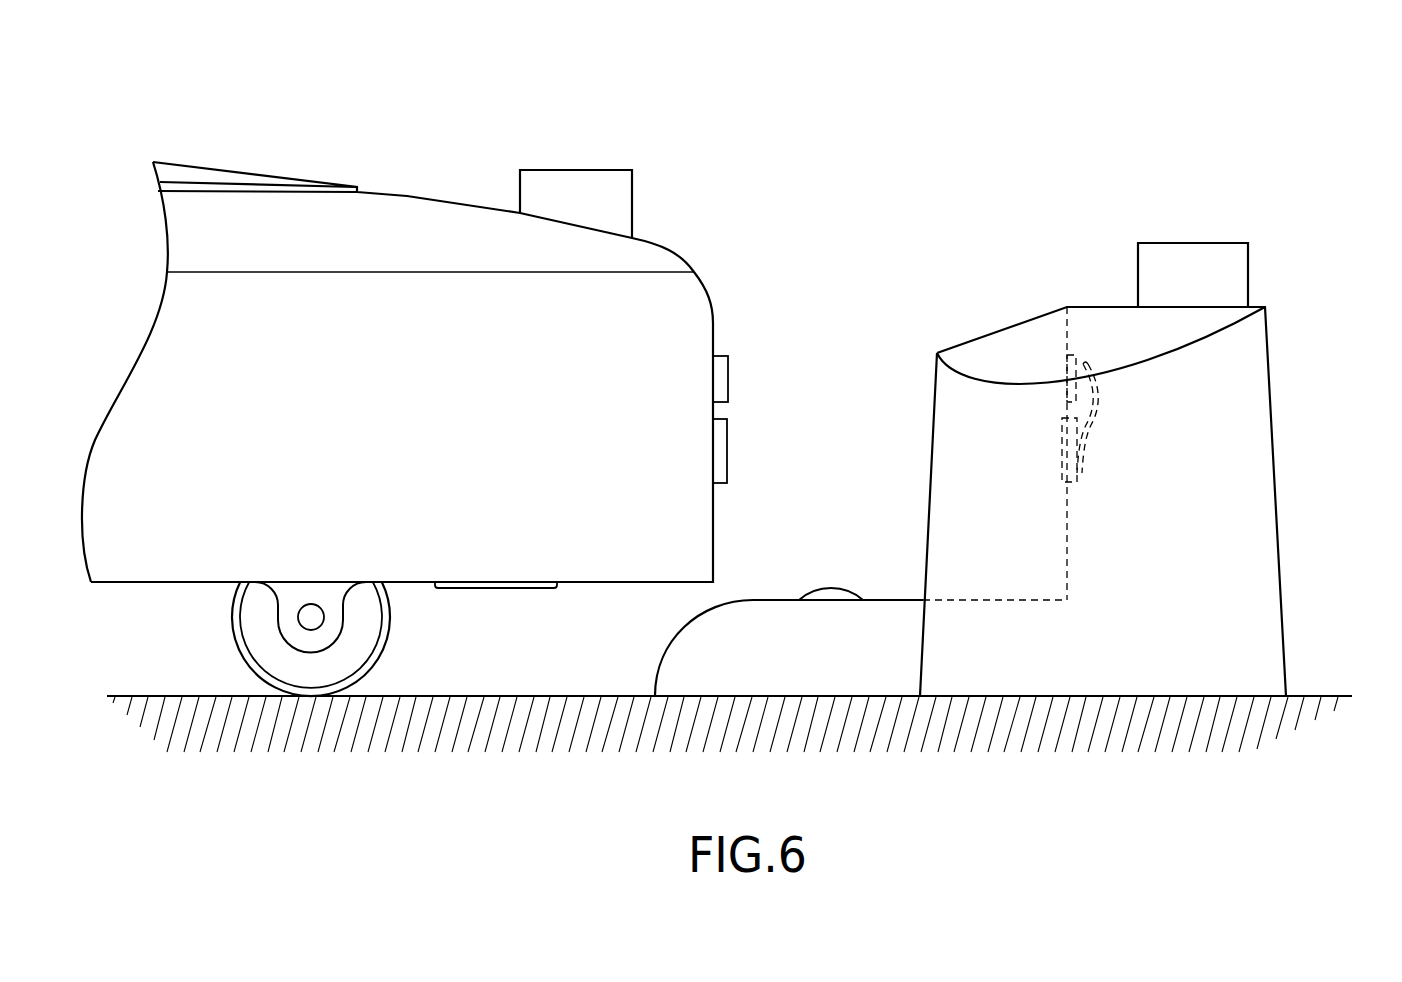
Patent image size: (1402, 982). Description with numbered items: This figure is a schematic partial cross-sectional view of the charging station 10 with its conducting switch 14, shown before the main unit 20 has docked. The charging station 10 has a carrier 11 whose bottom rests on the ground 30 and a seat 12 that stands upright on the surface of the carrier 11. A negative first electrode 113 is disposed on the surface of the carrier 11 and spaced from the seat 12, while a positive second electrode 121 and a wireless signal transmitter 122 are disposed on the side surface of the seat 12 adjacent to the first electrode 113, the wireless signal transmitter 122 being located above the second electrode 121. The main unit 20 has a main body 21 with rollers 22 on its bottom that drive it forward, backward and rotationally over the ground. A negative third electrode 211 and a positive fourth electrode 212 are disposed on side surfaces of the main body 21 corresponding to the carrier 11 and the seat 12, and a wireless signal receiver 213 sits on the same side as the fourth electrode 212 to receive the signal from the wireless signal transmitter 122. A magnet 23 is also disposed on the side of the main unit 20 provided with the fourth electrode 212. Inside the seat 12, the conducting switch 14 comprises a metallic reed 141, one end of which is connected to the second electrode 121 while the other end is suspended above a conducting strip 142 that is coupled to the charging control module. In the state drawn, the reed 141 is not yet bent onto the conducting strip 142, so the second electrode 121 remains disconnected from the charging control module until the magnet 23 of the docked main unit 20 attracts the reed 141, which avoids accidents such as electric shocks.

The charging station 10 is at (979, 432).
The carrier 11 is at (676, 641).
The first electrode 113 is at (838, 596).
The seat 12 is at (1284, 532).
The second electrode 121 is at (1062, 450).
The wireless signal transmitter 122 is at (1212, 247).
The conducting switch 14 is at (1112, 398).
The reed 141 is at (1085, 426).
The conducting strip 142 is at (1077, 357).
The main unit 20 is at (442, 382).
The main body 21 is at (152, 558).
The third electrode 211 is at (498, 588).
The fourth electrode 212 is at (724, 451).
The wireless signal receiver 213 is at (574, 178).
The rollers 22 is at (258, 625).
The magnet 23 is at (724, 378).
The ground 30 is at (1323, 695).